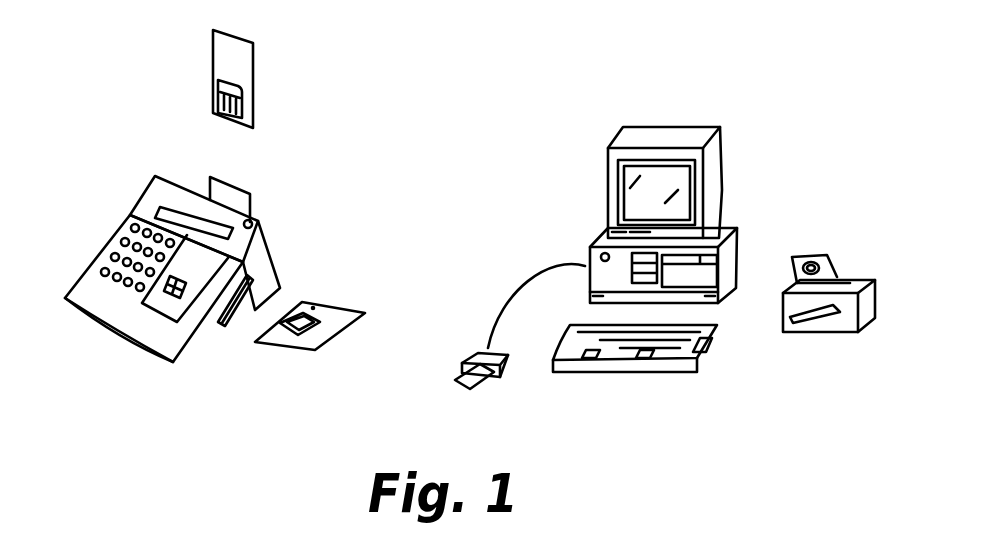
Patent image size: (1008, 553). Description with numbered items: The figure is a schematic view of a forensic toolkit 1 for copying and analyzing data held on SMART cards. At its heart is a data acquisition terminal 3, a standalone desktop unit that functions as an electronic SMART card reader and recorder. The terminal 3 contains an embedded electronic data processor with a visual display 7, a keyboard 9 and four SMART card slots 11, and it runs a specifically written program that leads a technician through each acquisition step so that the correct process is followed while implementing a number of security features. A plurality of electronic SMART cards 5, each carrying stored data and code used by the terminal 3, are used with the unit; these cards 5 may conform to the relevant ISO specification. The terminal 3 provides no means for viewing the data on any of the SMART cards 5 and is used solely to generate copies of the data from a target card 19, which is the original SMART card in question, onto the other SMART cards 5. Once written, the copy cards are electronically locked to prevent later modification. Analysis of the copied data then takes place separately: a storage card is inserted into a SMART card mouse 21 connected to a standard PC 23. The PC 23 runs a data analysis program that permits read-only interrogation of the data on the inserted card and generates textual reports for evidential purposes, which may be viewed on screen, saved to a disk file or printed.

The forensic toolkit 1 is at (428, 94).
The data acquisition terminal 3 is at (265, 268).
The electronic SMART cards 5 is at (335, 318).
The visual display 7 is at (173, 210).
The keyboard 9 is at (116, 246).
The SMART card slots 11 is at (249, 223).
The target card 19 is at (243, 66).
The SMART card mouse 21 is at (478, 357).
The PC 23 is at (607, 270).